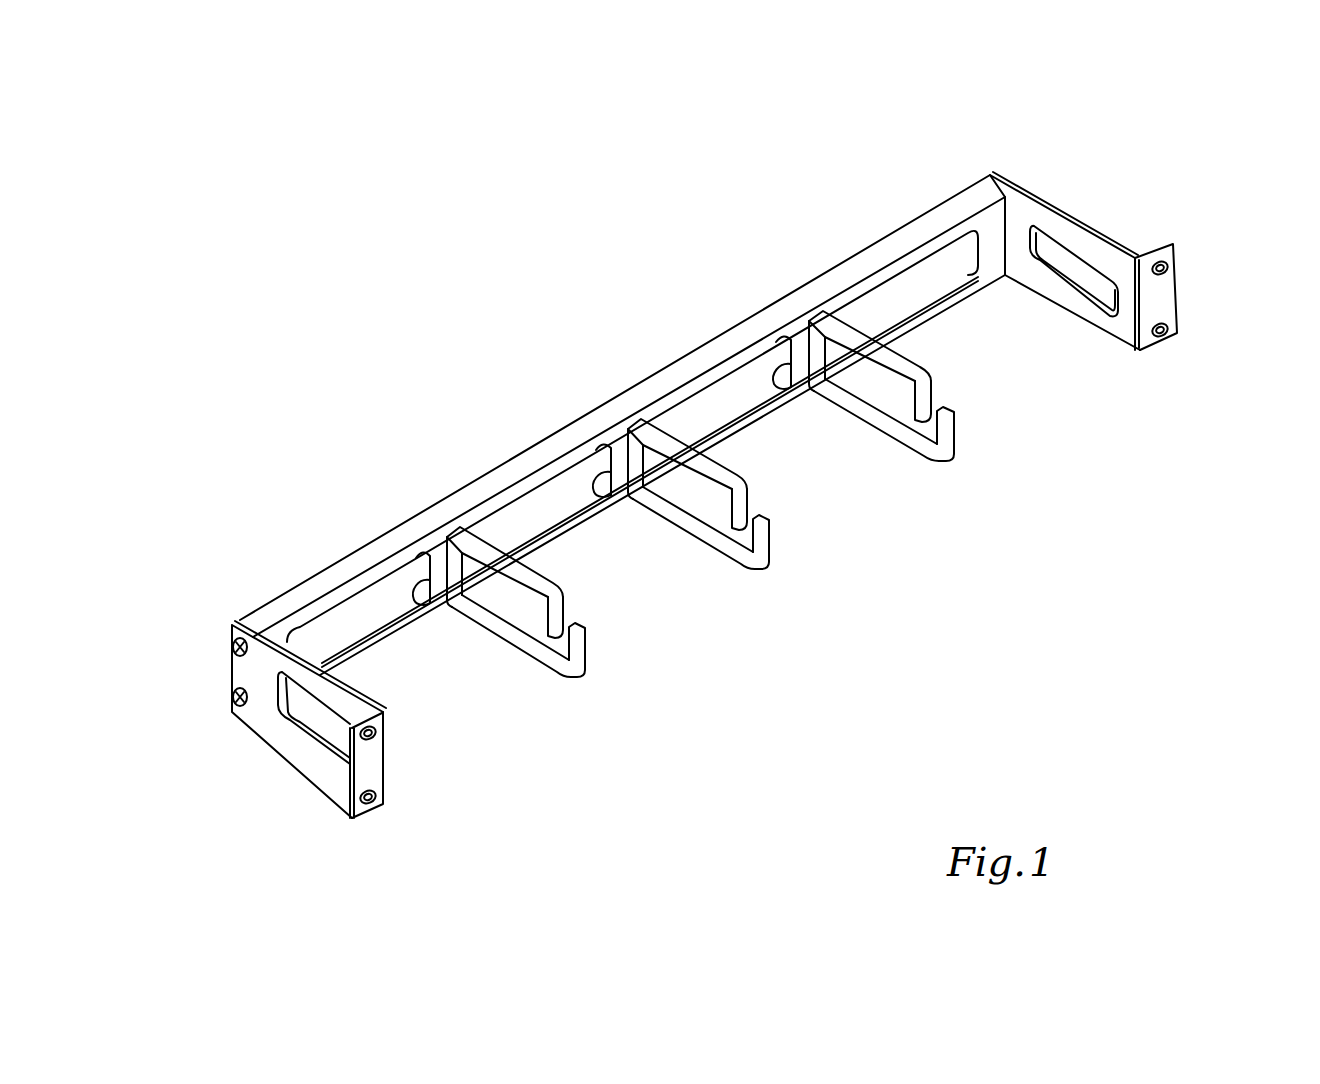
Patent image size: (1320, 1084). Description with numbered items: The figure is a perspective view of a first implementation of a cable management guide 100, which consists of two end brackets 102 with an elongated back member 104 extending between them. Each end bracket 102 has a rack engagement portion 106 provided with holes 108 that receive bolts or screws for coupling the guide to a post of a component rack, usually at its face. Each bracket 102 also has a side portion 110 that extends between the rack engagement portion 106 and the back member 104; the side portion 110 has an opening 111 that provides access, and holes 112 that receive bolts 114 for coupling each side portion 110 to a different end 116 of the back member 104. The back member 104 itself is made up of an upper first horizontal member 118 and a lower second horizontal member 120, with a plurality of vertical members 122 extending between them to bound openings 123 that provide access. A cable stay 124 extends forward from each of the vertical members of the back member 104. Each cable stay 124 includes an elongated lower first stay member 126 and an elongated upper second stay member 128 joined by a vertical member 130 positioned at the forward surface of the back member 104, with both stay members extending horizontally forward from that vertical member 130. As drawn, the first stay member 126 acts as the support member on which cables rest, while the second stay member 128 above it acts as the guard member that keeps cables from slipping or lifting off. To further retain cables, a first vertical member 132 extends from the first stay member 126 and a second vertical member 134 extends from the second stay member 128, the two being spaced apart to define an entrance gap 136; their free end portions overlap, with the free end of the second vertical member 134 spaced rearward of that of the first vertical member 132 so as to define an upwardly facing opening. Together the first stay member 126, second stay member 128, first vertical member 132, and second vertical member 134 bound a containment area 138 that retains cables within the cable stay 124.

The cable management guide 100 is at (423, 226).
The end bracket 102 is at (243, 758).
The back member 104 is at (729, 299).
The rack engagement portion 106 is at (390, 763).
The holes 108 is at (376, 733).
The side portion 110 is at (300, 752).
The opening 111 is at (330, 732).
The holes 112 is at (238, 655).
The bolts 114 is at (234, 644).
The end 116 is at (240, 620).
The upper first horizontal member 118 is at (556, 438).
The lower second horizontal member 120 is at (735, 442).
The vertical members 122 is at (430, 605).
The openings 123 is at (890, 300).
The cable stay 124 is at (552, 712).
The first stay member 126 is at (515, 662).
The second stay member 128 is at (562, 558).
The vertical member 130 is at (430, 556).
The first vertical member 132 is at (584, 650).
The second vertical member 134 is at (566, 606).
The entrance gap 136 is at (578, 626).
The containment area 138 is at (510, 605).